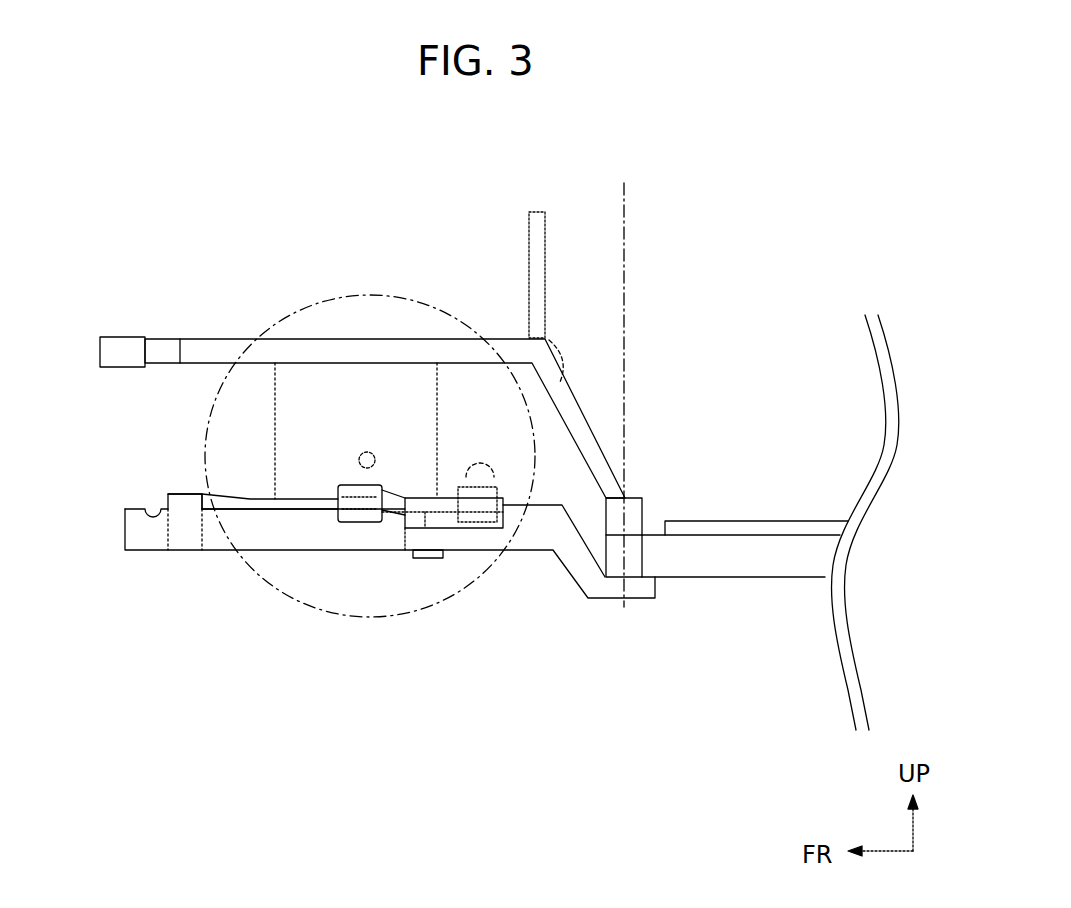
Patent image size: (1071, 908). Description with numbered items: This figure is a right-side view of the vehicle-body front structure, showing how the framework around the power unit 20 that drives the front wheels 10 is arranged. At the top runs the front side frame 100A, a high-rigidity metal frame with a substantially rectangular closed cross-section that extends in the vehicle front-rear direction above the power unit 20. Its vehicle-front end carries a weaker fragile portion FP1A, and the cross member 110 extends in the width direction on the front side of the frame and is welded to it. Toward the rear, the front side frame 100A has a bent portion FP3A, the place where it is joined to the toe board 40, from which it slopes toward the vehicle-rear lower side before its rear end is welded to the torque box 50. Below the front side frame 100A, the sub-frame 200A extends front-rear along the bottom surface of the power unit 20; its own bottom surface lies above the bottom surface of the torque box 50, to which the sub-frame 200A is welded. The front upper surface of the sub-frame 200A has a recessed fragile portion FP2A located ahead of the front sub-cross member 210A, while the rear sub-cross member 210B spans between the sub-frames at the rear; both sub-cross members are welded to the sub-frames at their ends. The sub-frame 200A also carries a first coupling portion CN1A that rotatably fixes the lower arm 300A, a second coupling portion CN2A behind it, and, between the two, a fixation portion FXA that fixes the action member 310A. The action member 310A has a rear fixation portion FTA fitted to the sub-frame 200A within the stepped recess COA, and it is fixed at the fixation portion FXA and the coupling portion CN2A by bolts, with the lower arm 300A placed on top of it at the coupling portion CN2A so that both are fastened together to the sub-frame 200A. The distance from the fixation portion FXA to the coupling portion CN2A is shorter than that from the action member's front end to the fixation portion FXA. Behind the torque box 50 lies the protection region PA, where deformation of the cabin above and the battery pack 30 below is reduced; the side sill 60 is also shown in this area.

The front wheel 10 is at (335, 302).
The power unit 20 is at (340, 380).
The battery pack 30 is at (765, 512).
The toe board 40 is at (537, 258).
The torque box 50 is at (641, 498).
The side sill 60 is at (728, 565).
The front side frame 100A is at (197, 352).
The cross member 110 is at (158, 340).
The sub-frame 200A is at (237, 528).
The sub-cross member 210A is at (188, 502).
The sub-cross member 210B is at (545, 502).
The lower arm 300A is at (448, 475).
The action member 310A is at (303, 505).
The coupling portion CN1A is at (338, 570).
The coupling portion CN2A is at (494, 580).
The fixation portion FTA is at (455, 552).
The fixation portion FXA is at (412, 576).
The recess COA is at (514, 550).
The fragile portion FP1A is at (114, 362).
The fragile portion FP2A is at (153, 502).
The bent portion FP3A is at (560, 326).
The protection region PA is at (630, 200).